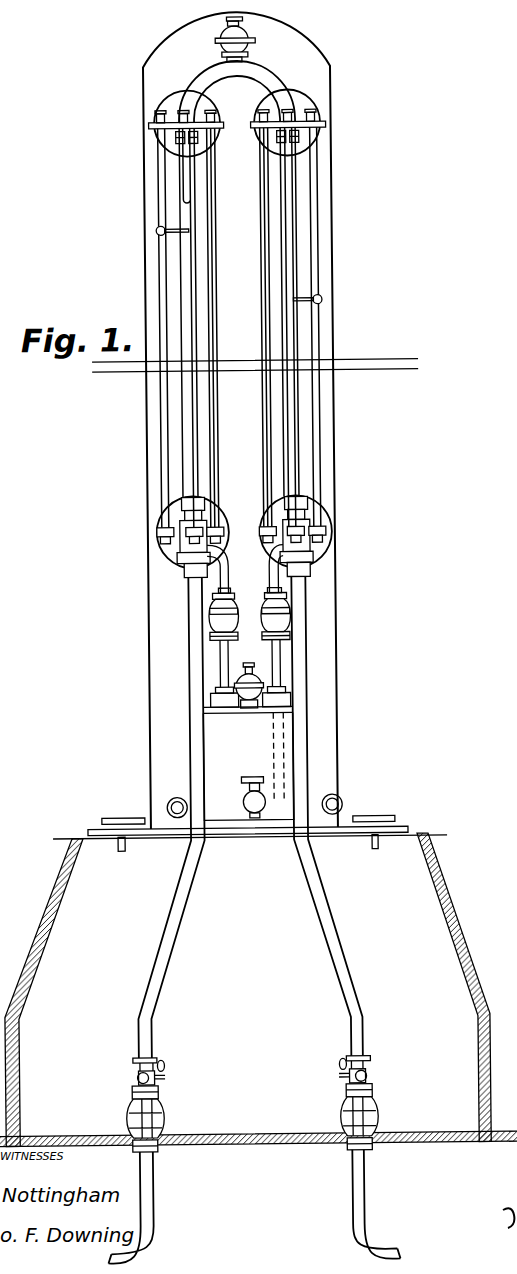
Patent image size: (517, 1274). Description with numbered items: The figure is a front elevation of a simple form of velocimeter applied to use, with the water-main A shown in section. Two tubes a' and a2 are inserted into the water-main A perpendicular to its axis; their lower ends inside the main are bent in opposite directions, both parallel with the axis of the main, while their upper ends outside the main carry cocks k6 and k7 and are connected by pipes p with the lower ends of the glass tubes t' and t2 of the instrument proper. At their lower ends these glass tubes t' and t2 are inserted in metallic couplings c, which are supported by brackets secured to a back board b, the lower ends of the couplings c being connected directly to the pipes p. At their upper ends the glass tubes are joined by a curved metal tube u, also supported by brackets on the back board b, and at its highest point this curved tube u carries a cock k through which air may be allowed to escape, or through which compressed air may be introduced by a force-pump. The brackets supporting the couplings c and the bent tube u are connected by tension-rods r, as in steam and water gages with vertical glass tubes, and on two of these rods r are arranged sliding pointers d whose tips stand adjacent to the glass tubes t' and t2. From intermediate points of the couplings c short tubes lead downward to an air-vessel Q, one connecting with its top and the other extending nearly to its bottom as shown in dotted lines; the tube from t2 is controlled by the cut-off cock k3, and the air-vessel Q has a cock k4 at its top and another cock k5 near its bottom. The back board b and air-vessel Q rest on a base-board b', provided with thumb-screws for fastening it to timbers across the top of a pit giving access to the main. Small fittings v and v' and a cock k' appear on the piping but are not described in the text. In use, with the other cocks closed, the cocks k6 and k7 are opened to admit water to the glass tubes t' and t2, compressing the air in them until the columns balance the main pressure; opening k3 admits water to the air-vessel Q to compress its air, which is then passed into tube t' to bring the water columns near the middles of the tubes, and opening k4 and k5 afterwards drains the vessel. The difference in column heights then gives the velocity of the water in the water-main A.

The cock k is at (242, 40).
The curved metal tube u is at (242, 80).
The sliding pointer d is at (158, 232).
The glass tube t' is at (160, 328).
The glass tube t2 is at (299, 417).
The tension-rod r is at (218, 408).
The back board b is at (234, 537).
The metallic coupling c is at (179, 554).
The nipple v is at (229, 582).
The nipple v' is at (268, 582).
The valve k' is at (203, 650).
The cut-off cock k3 is at (284, 620).
The cock k4 is at (249, 675).
The air-vessel Q is at (248, 763).
The cock k5 is at (238, 780).
The base-board b' is at (248, 841).
The pipe p is at (148, 1022).
The cock k6 is at (160, 1105).
The cock k7 is at (347, 1101).
The water-main A is at (258, 1015).
The tube a' is at (130, 1208).
The tube a2 is at (376, 1204).